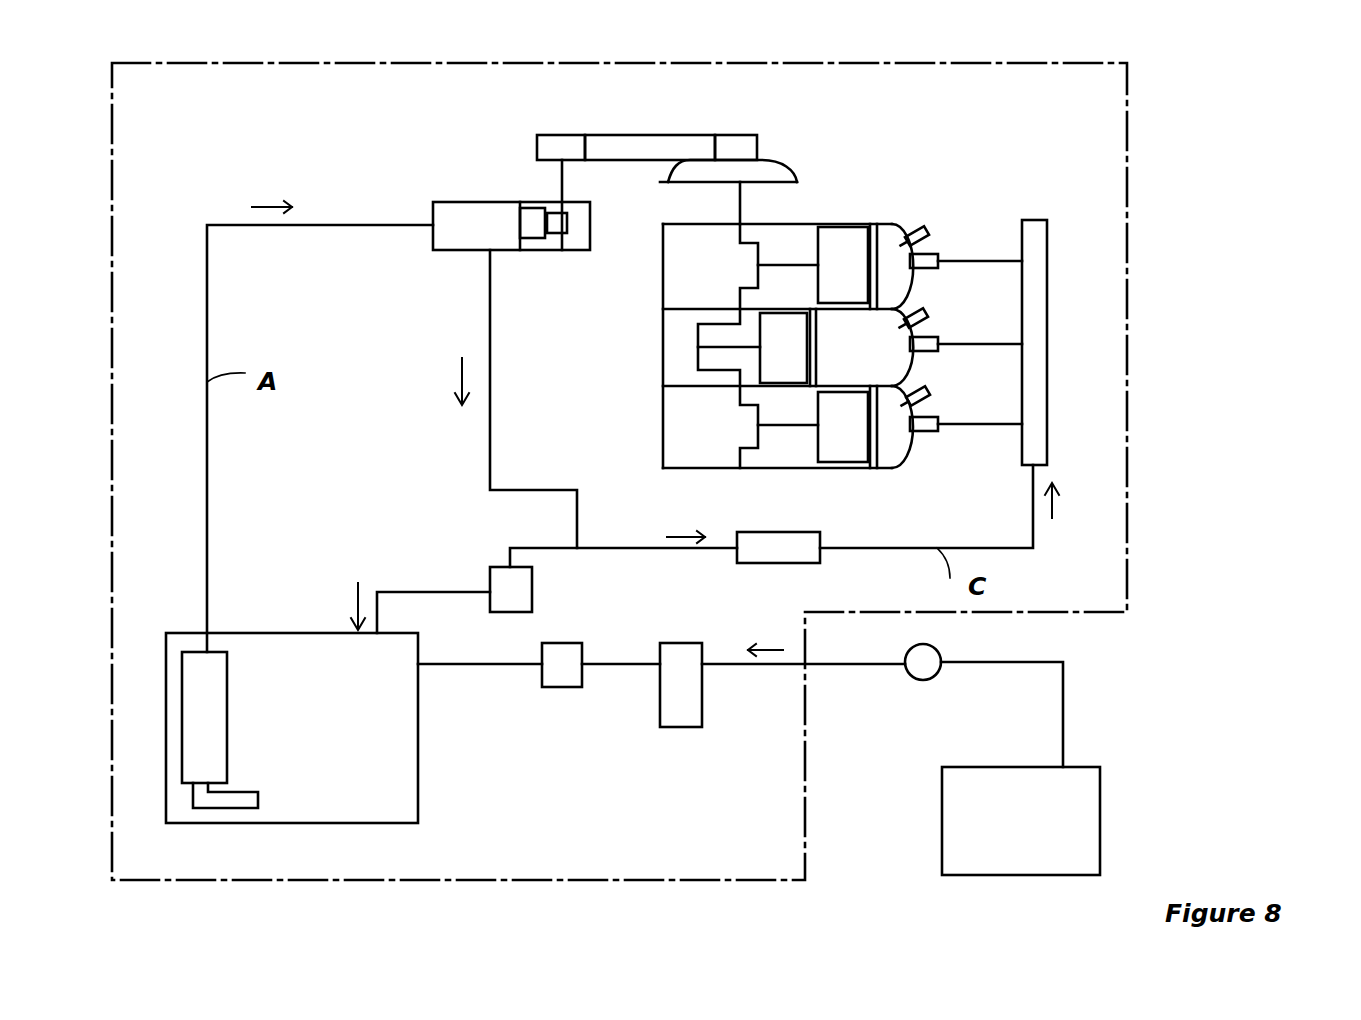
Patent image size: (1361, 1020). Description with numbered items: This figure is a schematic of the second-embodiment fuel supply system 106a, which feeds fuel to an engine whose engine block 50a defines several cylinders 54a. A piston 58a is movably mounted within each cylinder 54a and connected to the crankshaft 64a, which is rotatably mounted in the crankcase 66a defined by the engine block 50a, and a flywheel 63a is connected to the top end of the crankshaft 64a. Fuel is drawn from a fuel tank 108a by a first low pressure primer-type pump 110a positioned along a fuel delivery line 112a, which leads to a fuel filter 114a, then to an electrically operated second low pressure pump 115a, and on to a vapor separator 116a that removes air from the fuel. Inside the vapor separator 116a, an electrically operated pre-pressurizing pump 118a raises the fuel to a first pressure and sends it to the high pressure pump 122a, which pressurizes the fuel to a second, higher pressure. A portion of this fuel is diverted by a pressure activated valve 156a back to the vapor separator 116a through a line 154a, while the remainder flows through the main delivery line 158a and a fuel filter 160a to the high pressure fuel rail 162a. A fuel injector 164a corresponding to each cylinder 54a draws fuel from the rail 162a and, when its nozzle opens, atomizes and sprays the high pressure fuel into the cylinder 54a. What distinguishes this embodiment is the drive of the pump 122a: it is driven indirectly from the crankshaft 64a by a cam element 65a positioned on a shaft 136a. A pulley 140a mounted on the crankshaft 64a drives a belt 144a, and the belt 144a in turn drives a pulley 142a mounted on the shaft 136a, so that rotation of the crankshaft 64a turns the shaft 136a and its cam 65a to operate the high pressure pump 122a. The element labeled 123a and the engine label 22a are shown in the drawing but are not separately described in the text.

The fuel supply system 106a is at (1130, 274).
The fuel tank 108a is at (1090, 800).
The first low pressure pump 110a is at (917, 672).
The fuel delivery line 112a is at (1063, 685).
The fuel filter 114a is at (687, 713).
The second low pressure pump 115a is at (560, 677).
The vapor separator 116a is at (390, 773).
The pre-pressurizing pump 118a is at (218, 717).
The high pressure pump 122a is at (447, 215).
The sensor 123a is at (528, 232).
The shaft 136a is at (562, 182).
The pulley 140a is at (740, 142).
The pulley 142a is at (562, 142).
The belt 144a is at (640, 143).
The line 154a is at (558, 548).
The pressure activated valve 156a is at (490, 577).
The main delivery line 158a is at (623, 548).
The fuel filter 160a is at (775, 553).
The high pressure fuel rail 162a is at (1040, 282).
The fuel injector 164a is at (922, 270).
The engine 22a is at (788, 321).
The engine block 50a is at (663, 430).
The cylinder 54a is at (897, 223).
The piston 58a is at (847, 242).
The flywheel 63a is at (778, 170).
The crankshaft 64a is at (738, 233).
The cam element 65a is at (553, 232).
The crankcase 66a is at (672, 292).